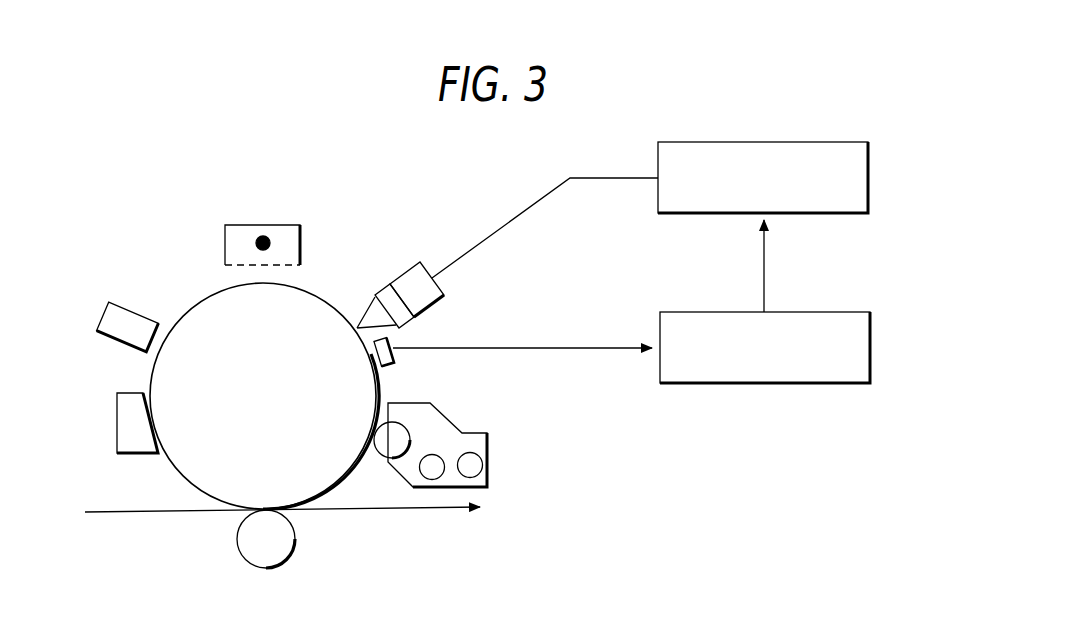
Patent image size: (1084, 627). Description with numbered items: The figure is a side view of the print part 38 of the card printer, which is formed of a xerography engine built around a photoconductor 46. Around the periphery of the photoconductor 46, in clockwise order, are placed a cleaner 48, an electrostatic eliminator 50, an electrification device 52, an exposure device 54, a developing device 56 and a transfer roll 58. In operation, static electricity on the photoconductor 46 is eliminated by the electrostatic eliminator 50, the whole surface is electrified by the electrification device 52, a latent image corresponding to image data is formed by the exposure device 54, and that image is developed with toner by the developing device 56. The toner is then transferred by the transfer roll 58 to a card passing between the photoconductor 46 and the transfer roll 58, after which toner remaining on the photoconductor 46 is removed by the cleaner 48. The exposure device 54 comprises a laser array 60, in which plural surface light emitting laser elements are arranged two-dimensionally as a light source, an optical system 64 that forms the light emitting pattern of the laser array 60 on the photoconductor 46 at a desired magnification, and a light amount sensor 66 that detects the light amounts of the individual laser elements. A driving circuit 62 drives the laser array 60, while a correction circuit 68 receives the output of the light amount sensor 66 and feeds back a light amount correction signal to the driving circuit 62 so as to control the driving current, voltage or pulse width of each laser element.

The print part 38 is at (160, 246).
The photoconductor 46 is at (187, 467).
The cleaner 48 is at (117, 423).
The electrostatic eliminator 50 is at (107, 308).
The electrification device 52 is at (265, 224).
The exposure device 54 is at (409, 258).
The developing device 56 is at (488, 458).
The transfer roll 58 is at (296, 535).
The laser array 60 is at (408, 267).
The driving circuit 62 is at (870, 175).
The optical system 64 is at (378, 290).
The light amount sensor 66 is at (392, 346).
The correction circuit 68 is at (872, 345).